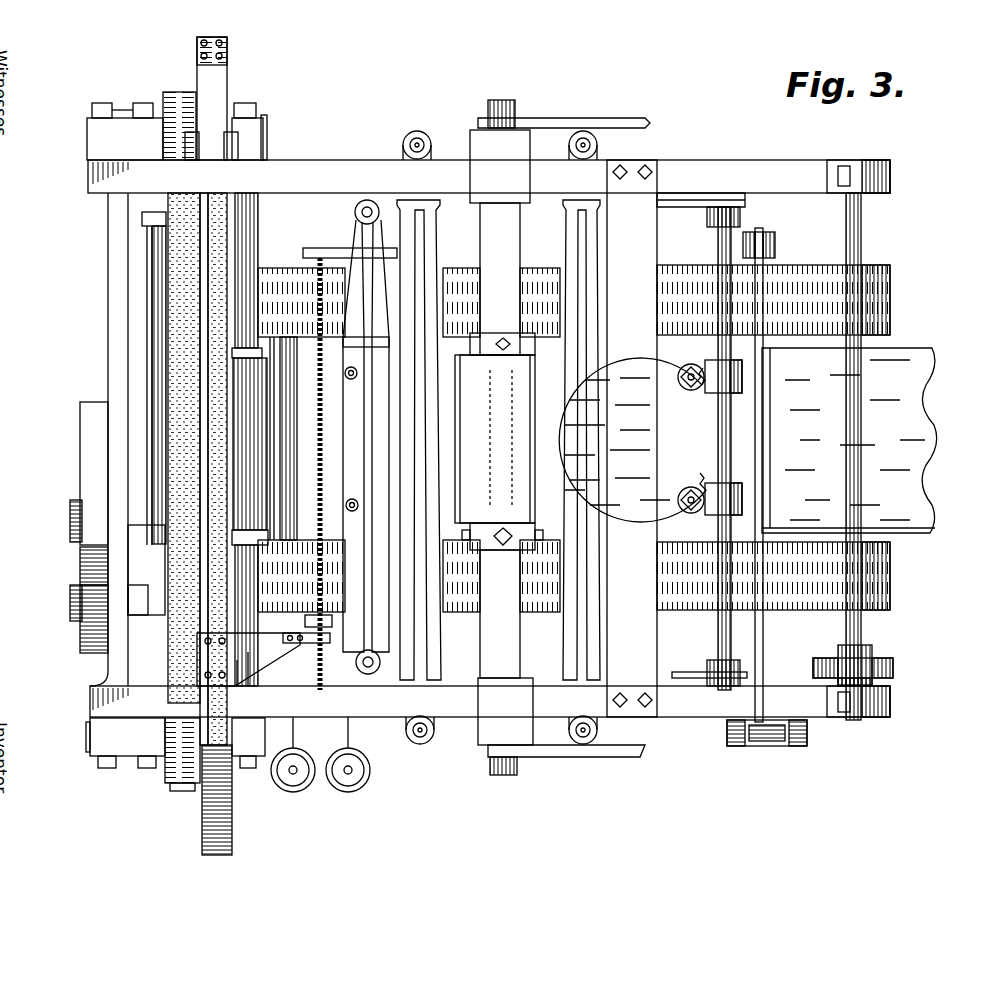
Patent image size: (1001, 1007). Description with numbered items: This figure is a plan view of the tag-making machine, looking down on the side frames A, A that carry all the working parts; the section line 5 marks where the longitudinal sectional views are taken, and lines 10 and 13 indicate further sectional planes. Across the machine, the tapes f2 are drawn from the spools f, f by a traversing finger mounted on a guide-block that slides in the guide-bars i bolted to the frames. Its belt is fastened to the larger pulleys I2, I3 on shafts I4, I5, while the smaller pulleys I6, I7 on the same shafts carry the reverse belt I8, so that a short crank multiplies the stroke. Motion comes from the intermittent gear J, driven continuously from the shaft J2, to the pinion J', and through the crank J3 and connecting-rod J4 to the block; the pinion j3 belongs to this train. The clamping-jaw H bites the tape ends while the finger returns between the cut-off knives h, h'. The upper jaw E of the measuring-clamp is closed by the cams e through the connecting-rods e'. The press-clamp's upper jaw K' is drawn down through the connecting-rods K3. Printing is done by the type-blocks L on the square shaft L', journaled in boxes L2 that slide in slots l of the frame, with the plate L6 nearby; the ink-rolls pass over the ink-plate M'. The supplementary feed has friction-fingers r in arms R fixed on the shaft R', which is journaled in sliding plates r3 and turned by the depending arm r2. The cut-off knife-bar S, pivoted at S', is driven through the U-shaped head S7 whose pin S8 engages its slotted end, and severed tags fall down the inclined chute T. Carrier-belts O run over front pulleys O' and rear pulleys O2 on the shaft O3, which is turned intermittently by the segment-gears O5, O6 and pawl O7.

The side frame A is at (344, 106).
The section line 5 is at (112, 437).
The section line 10 is at (605, 830).
The section line 13 is at (517, 130).
The upper jaw of the measuring-clamp E is at (366, 426).
The cam e is at (355, 683).
The connecting-rod e' is at (374, 165).
The spool f is at (298, 792).
The tape f2 is at (290, 470).
The upper clamping-jaw H is at (333, 246).
The upper cut-off knife jaw h is at (307, 474).
The lower cut-off knife jaw h' is at (341, 658).
The large pulley I2 is at (202, 820).
The large pulley I3 is at (200, 70).
The pulley shaft I4 is at (90, 752).
The pulley shaft I5 is at (80, 135).
The small pulley I6 is at (165, 96).
The small pulley I7 is at (168, 772).
The belt I8 is at (170, 335).
The guide-bar i is at (232, 450).
The intermittent gear J is at (69, 473).
The pinion J' is at (66, 624).
The shaft J2 is at (70, 528).
The crank J3 is at (136, 560).
The pinion j3 is at (70, 604).
The connecting-rod J4 is at (152, 290).
The upper jaw of the press-clamp K' is at (498, 440).
The connecting-rod K3 is at (417, 130).
The type-block L is at (499, 441).
The square shaft L' is at (480, 441).
The box L2 is at (501, 437).
The plate L6 is at (552, 750).
The slot l is at (470, 172).
The ink-plate M' is at (632, 440).
The carrier-belt O is at (773, 440).
The front pulley O' is at (351, 439).
The rear pulley O2 is at (880, 268).
The shaft O3 is at (862, 478).
The segment-gear O5 is at (893, 668).
The segment-gear O6 is at (893, 680).
The pawl O7 is at (872, 655).
The arm R is at (686, 442).
The shaft R' is at (701, 448).
The finger r is at (665, 362).
The depending arm r2 is at (708, 215).
The sliding plate r3 is at (745, 210).
The knife-bar S is at (773, 477).
The pivot S' is at (790, 227).
The U-shaped head S7 is at (808, 735).
The pin S8 is at (783, 742).
The inclined chute T is at (922, 540).